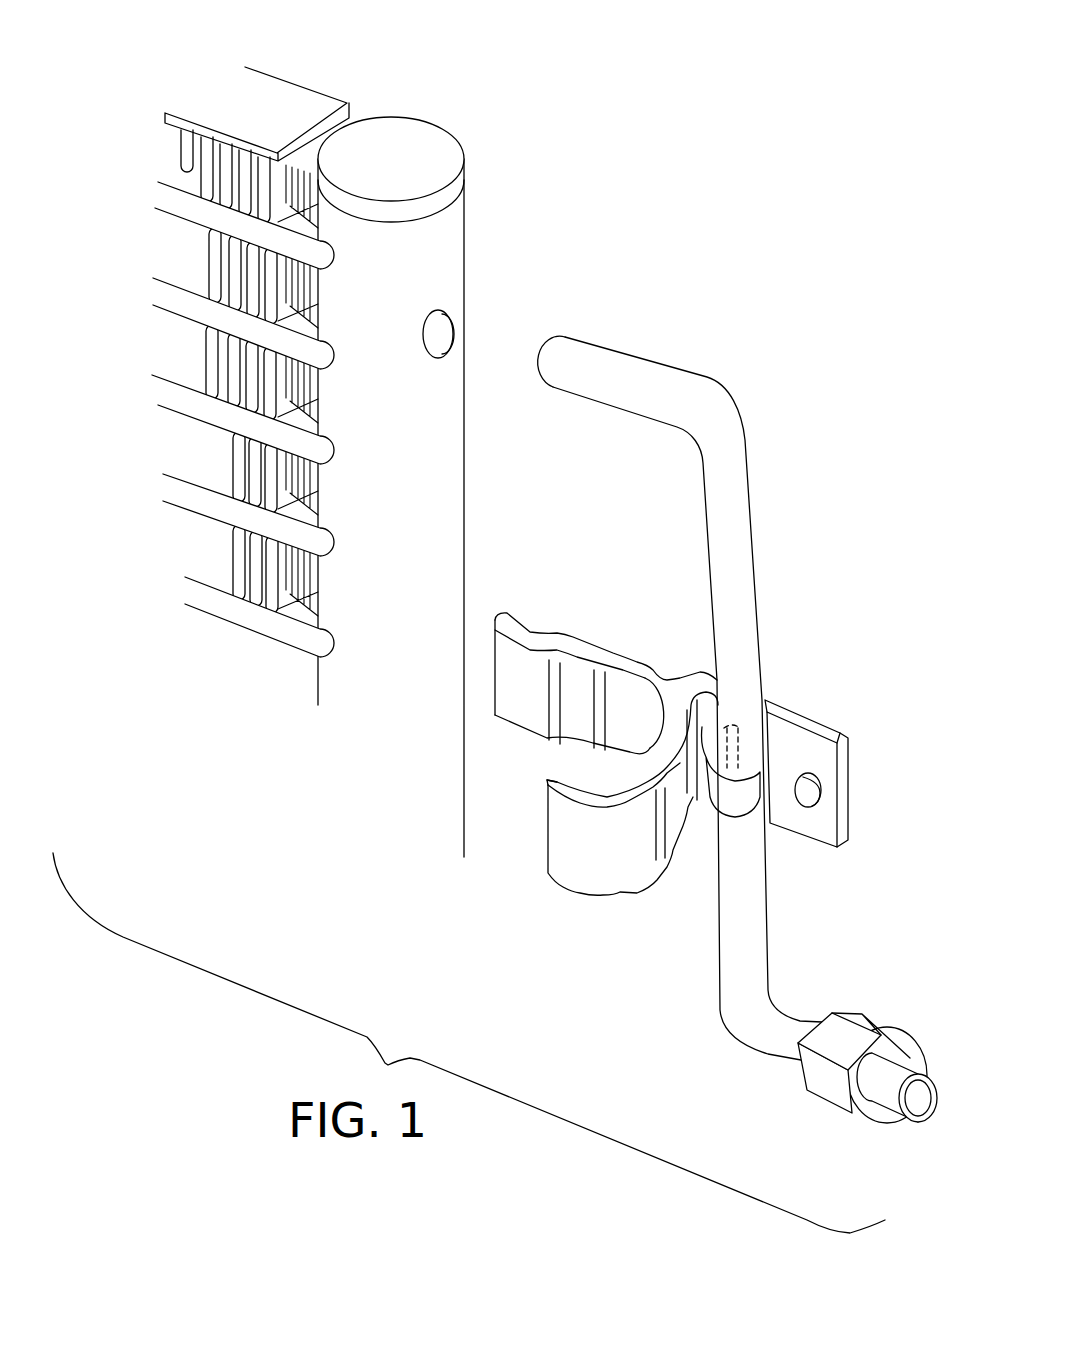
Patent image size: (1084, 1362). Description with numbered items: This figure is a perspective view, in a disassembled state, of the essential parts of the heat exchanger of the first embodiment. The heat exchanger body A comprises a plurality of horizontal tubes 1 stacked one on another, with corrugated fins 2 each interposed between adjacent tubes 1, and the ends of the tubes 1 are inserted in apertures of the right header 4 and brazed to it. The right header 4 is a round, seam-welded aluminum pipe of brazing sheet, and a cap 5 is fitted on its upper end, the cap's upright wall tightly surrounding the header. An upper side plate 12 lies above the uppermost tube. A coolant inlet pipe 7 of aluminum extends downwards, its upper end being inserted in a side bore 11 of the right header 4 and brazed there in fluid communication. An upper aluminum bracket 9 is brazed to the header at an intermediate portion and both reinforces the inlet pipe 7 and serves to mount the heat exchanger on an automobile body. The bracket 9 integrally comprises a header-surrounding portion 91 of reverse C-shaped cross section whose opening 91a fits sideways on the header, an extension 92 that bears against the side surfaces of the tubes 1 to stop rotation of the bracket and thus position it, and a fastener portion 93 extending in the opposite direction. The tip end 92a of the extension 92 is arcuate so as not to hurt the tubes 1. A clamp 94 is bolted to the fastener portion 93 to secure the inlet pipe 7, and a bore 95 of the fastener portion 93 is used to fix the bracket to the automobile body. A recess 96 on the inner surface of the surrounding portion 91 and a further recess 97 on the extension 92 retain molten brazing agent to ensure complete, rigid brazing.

The horizontal tubes 1 is at (233, 613).
The corrugated fins 2 is at (233, 350).
The right header 4 is at (447, 233).
The cap 5 is at (428, 140).
The coolant inlet pipe 7 is at (735, 508).
The upper bracket 9 is at (908, 697).
The side bore 11 is at (455, 338).
The upper side plate 12 is at (290, 100).
The header-surrounding portion 91 is at (587, 882).
The opening 91a is at (565, 767).
The extension 92 is at (530, 630).
The tip end 92a is at (494, 663).
The fastener portion 93 is at (793, 700).
The clamp 94 is at (740, 803).
The bore 95 is at (820, 797).
The recess 96 is at (640, 705).
The further recess 97 is at (578, 672).
The heat exchanger body A is at (120, 497).